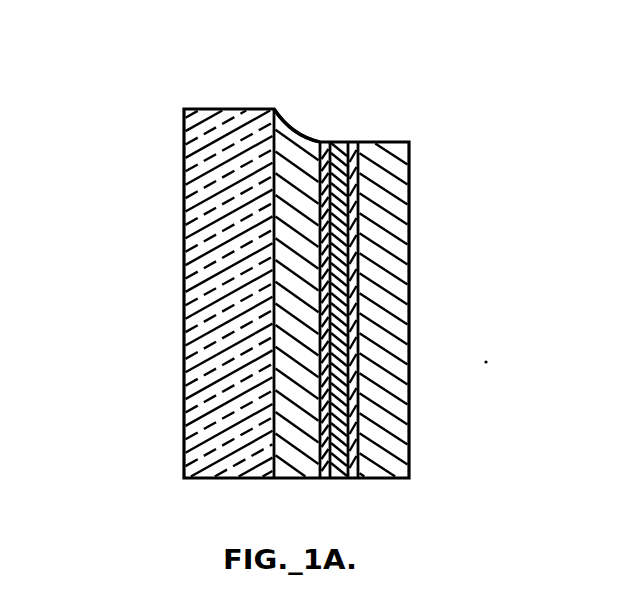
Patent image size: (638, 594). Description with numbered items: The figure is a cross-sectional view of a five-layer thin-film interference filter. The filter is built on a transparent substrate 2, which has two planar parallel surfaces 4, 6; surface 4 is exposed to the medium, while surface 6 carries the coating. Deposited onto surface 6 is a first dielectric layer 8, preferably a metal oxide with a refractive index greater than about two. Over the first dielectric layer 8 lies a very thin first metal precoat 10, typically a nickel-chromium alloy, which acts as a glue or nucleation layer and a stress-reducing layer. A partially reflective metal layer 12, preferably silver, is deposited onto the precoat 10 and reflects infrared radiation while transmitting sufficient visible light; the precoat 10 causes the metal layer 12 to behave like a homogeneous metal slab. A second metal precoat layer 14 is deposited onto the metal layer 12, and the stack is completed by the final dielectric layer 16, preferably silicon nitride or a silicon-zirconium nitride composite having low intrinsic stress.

The transparent substrate 2 is at (213, 109).
The surface 4 is at (185, 167).
The surface 6 is at (275, 110).
The first dielectric layer 8 is at (300, 136).
The first metal precoat 10 is at (322, 141).
The partially reflective metal layer 12 is at (340, 141).
The second metal precoat layer 14 is at (362, 141).
The final dielectric layer 16 is at (392, 141).